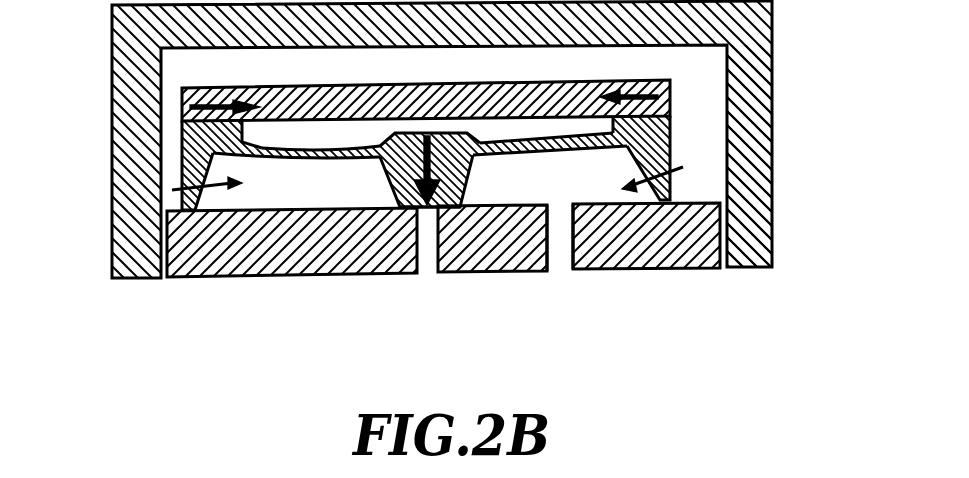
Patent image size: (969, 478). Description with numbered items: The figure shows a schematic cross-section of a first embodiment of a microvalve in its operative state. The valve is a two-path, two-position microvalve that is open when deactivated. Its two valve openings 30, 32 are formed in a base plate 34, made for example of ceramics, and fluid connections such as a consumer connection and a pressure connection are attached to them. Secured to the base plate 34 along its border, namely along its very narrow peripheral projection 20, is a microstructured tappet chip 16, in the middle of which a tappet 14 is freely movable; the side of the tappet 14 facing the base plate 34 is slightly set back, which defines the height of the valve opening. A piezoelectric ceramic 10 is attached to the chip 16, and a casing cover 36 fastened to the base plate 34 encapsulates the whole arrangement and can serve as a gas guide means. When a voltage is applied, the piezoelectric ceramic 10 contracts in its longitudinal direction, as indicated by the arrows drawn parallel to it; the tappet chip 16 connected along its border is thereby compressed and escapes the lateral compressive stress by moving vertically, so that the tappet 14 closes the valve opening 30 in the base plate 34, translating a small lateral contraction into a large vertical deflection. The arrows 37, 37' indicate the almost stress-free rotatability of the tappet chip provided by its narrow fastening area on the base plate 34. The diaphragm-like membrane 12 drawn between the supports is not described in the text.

The piezoelectric ceramic 10 is at (672, 95).
The diaphragm 12 is at (335, 158).
The tappet 14 is at (447, 183).
The microstructured tappet chip 16 is at (760, 233).
The peripheral projection 20 is at (230, 162).
The valve opening 30 is at (426, 258).
The valve opening 32 is at (560, 253).
The base plate 34 is at (657, 240).
The casing cover 36 is at (745, 48).
The arrow 37 is at (140, 177).
The arrow 37' is at (741, 177).